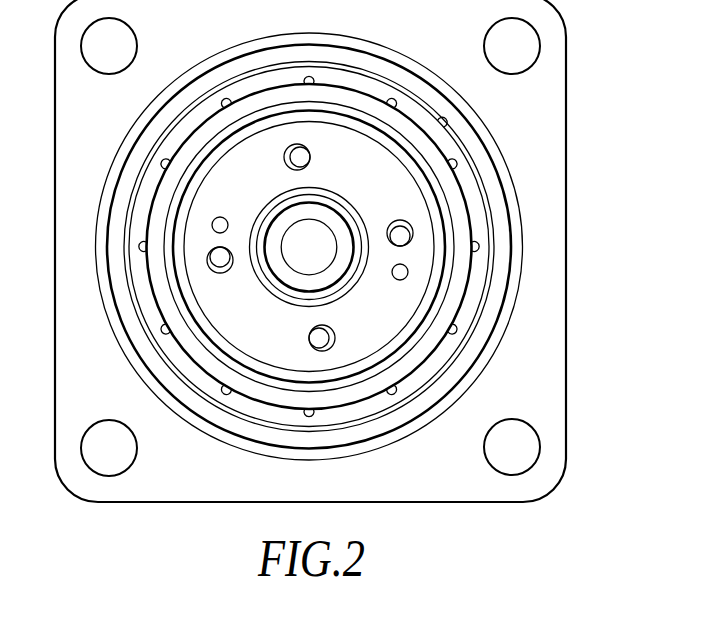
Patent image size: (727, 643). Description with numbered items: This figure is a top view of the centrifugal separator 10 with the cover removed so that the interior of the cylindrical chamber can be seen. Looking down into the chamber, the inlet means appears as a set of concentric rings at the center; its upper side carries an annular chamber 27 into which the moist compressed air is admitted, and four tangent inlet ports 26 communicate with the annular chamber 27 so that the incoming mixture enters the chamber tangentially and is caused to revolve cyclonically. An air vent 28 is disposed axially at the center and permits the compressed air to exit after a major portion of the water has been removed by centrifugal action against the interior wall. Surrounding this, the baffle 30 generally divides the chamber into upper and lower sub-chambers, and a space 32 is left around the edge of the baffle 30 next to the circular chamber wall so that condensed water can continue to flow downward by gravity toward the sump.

The centrifugal separator 10 is at (597, 210).
The inlet ports 26 is at (307, 158).
The annular chamber 27 is at (260, 326).
The air vent 28 is at (322, 257).
The baffle 30 is at (173, 146).
The space 32 is at (444, 127).